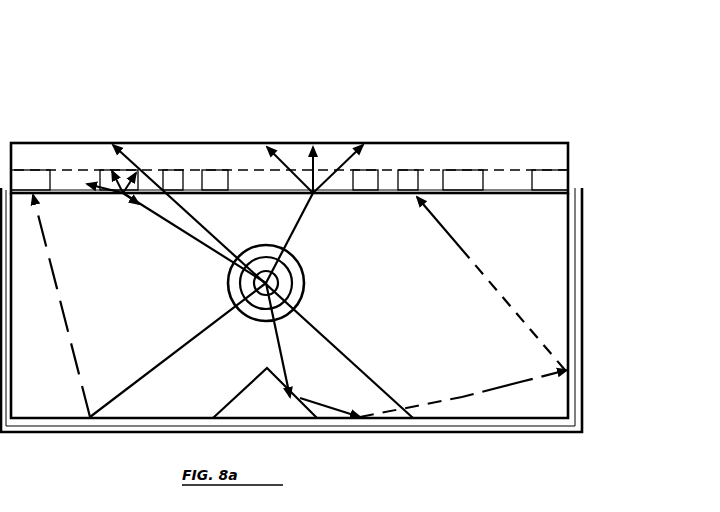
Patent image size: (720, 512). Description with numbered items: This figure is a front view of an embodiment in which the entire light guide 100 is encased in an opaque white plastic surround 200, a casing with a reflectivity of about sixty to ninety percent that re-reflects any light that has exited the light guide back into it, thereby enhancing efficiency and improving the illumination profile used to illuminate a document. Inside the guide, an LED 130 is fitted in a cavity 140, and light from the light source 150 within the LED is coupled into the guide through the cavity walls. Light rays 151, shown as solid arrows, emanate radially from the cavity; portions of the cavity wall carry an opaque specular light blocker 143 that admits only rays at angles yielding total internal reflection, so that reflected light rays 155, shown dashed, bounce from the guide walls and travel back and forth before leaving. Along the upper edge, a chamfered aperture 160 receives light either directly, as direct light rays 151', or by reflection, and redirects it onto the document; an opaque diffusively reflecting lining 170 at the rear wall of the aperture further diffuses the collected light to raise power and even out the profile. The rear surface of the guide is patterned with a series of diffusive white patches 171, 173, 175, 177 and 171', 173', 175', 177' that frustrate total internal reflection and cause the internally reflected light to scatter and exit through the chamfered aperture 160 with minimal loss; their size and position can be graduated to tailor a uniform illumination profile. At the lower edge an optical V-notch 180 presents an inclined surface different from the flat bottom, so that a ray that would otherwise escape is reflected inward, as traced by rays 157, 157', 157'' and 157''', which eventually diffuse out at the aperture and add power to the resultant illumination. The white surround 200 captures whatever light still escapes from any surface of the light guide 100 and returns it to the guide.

The light guide 100 is at (265, 108).
The LED 130 is at (290, 278).
The cavity 140 is at (300, 298).
The light blocker 143 is at (262, 252).
The light source 150 is at (292, 258).
The light rays 151 is at (258, 281).
The direct light rays 151' is at (165, 194).
The reflected light rays 155 is at (68, 342).
The ray 157 is at (298, 340).
The ray 157' is at (381, 401).
The ray 157'' is at (508, 383).
The ray 157''' is at (491, 283).
The chamfered aperture 160 is at (493, 157).
The opaque diffusively reflecting lining 170 is at (558, 187).
The diffusive white patch 171 is at (39, 171).
The diffusive white patch 171' is at (550, 170).
The diffusive white patch 173 is at (133, 171).
The diffusive white patch 173' is at (467, 170).
The diffusive white patch 175 is at (184, 172).
The diffusive white patch 175' is at (420, 171).
The diffusive white patch 177 is at (224, 171).
The diffusive white patch 177' is at (376, 171).
The optical V-notch 180 is at (263, 400).
The opaque white plastic surround 200 is at (558, 288).